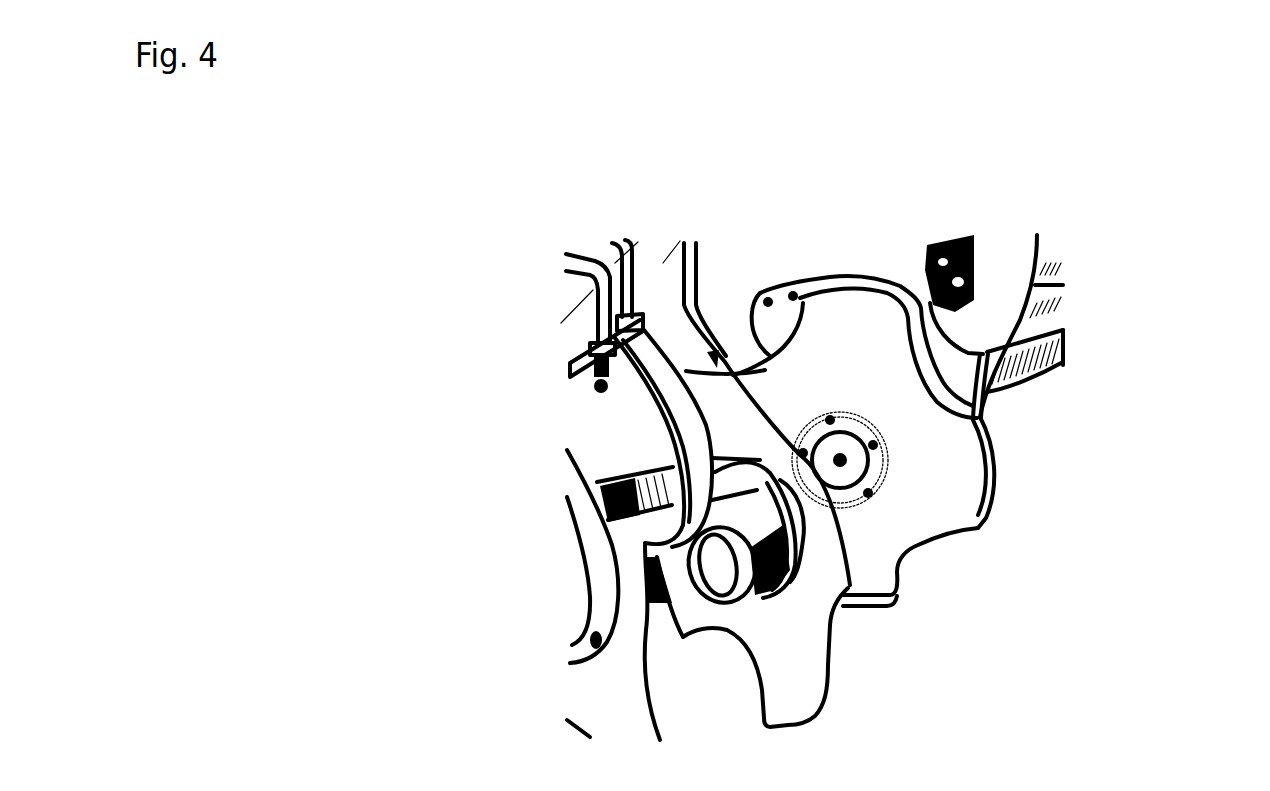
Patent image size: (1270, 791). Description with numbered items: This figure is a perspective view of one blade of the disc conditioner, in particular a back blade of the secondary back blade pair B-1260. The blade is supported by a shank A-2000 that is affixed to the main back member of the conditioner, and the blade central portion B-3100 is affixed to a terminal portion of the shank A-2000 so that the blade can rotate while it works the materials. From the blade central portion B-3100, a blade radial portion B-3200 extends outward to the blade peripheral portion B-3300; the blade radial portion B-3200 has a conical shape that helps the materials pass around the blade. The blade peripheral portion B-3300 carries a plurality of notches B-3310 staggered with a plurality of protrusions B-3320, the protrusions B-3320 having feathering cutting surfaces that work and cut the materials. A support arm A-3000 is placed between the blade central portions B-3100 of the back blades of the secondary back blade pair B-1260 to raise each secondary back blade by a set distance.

The shank A-2000 is at (660, 350).
The support arm A-3000 is at (799, 555).
The secondary back blade pair B-1260 is at (571, 307).
The blade central portion B-3100 is at (887, 477).
The blade radial portion B-3200 is at (868, 545).
The blade peripheral portion B-3300 is at (999, 467).
The notches B-3310 is at (940, 402).
The protrusions B-3320 is at (1000, 452).